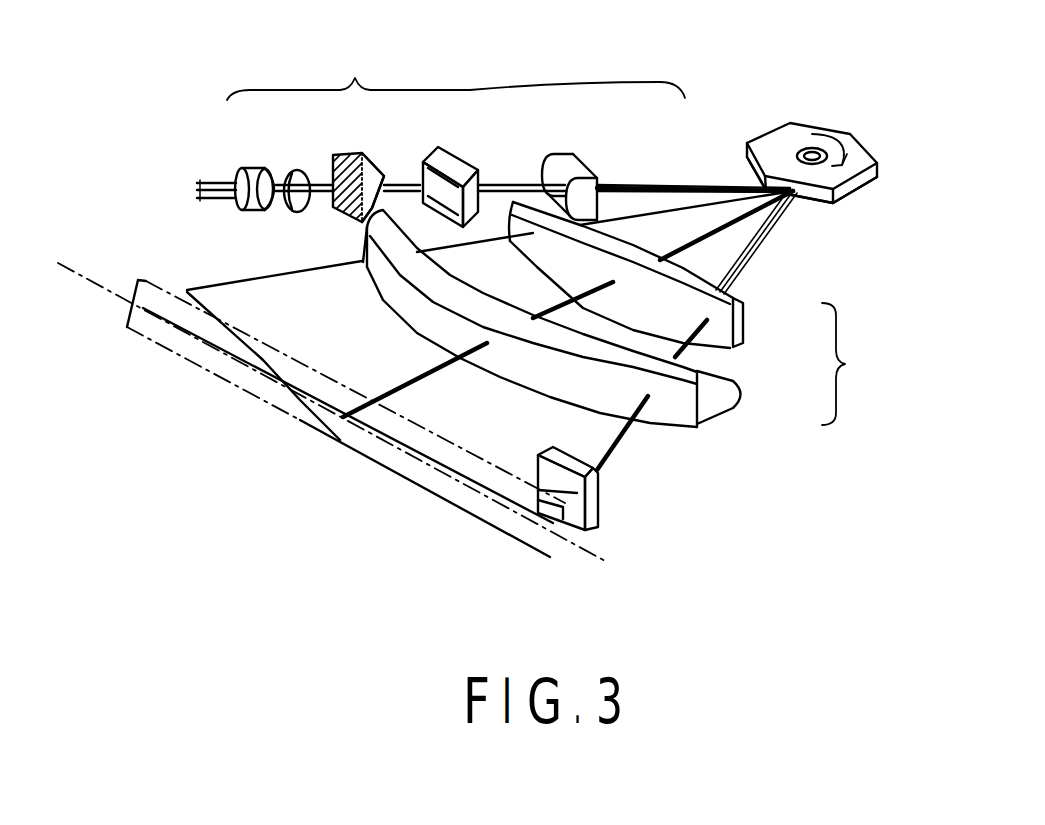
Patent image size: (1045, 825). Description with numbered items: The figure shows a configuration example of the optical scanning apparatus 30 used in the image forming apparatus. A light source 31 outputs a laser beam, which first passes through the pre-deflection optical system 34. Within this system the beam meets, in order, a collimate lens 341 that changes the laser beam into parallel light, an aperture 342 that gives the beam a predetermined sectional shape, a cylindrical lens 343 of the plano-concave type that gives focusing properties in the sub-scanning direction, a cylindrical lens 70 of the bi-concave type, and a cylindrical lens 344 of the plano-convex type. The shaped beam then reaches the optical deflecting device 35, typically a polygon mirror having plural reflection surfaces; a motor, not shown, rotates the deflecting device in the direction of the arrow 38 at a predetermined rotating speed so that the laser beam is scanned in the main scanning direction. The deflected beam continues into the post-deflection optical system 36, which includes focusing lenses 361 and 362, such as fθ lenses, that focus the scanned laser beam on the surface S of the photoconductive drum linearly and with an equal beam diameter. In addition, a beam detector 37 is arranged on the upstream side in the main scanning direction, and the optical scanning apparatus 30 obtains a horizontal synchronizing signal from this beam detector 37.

The optical scanning apparatus 30 is at (738, 83).
The light source 31 is at (262, 208).
The pre-deflection optical system 34 is at (456, 155).
The collimate lens 341 is at (290, 169).
The aperture 342 is at (331, 153).
The cylindrical lens 343 is at (364, 170).
The cylindrical lens 70 is at (458, 155).
The cylindrical lens 344 is at (580, 153).
The optical deflecting device 35 is at (830, 130).
The arrow 38 is at (850, 170).
The post-deflection optical system 36 is at (626, 314).
The focusing lens 361 is at (747, 323).
The focusing lens 362 is at (735, 386).
The beam detector 37 is at (602, 497).
The surface S is at (165, 318).